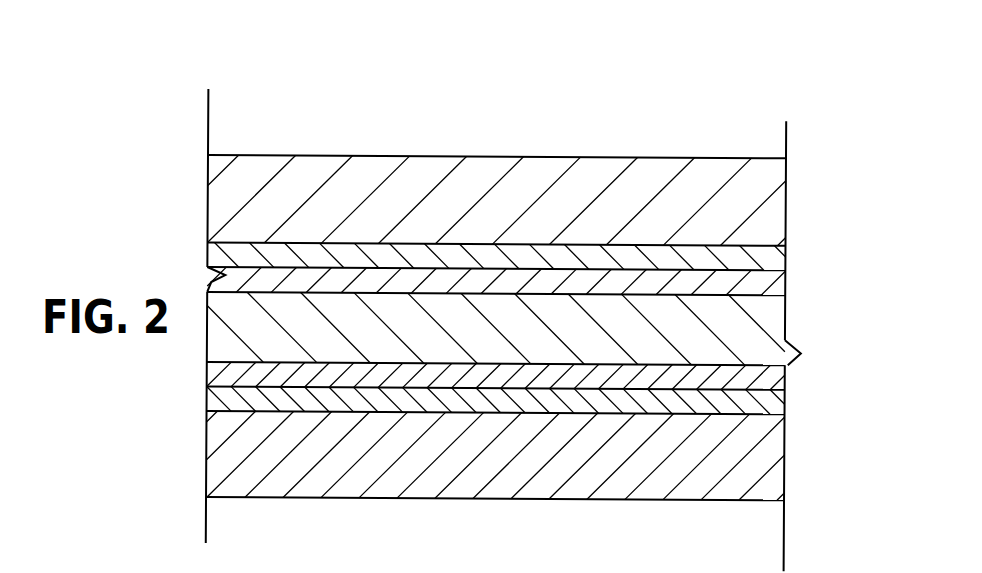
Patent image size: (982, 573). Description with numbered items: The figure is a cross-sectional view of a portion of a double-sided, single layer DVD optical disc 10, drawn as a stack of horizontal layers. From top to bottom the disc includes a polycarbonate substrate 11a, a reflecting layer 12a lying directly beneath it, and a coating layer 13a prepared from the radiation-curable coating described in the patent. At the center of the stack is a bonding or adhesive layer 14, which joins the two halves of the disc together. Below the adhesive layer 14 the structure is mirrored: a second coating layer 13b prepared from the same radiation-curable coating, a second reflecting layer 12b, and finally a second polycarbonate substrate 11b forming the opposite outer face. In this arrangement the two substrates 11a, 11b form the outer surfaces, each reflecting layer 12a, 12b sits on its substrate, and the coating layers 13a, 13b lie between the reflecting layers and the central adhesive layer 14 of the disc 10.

The DVD optical disc 10 is at (699, 122).
The polycarbonate substrate 11a is at (762, 236).
The second polycarbonate substrate 11b is at (760, 455).
The reflecting layer 12a is at (762, 263).
The second reflecting layer 12b is at (766, 405).
The coating layer 13a is at (762, 290).
The second coating layer 13b is at (776, 378).
The bonding or adhesive layer 14 is at (766, 323).